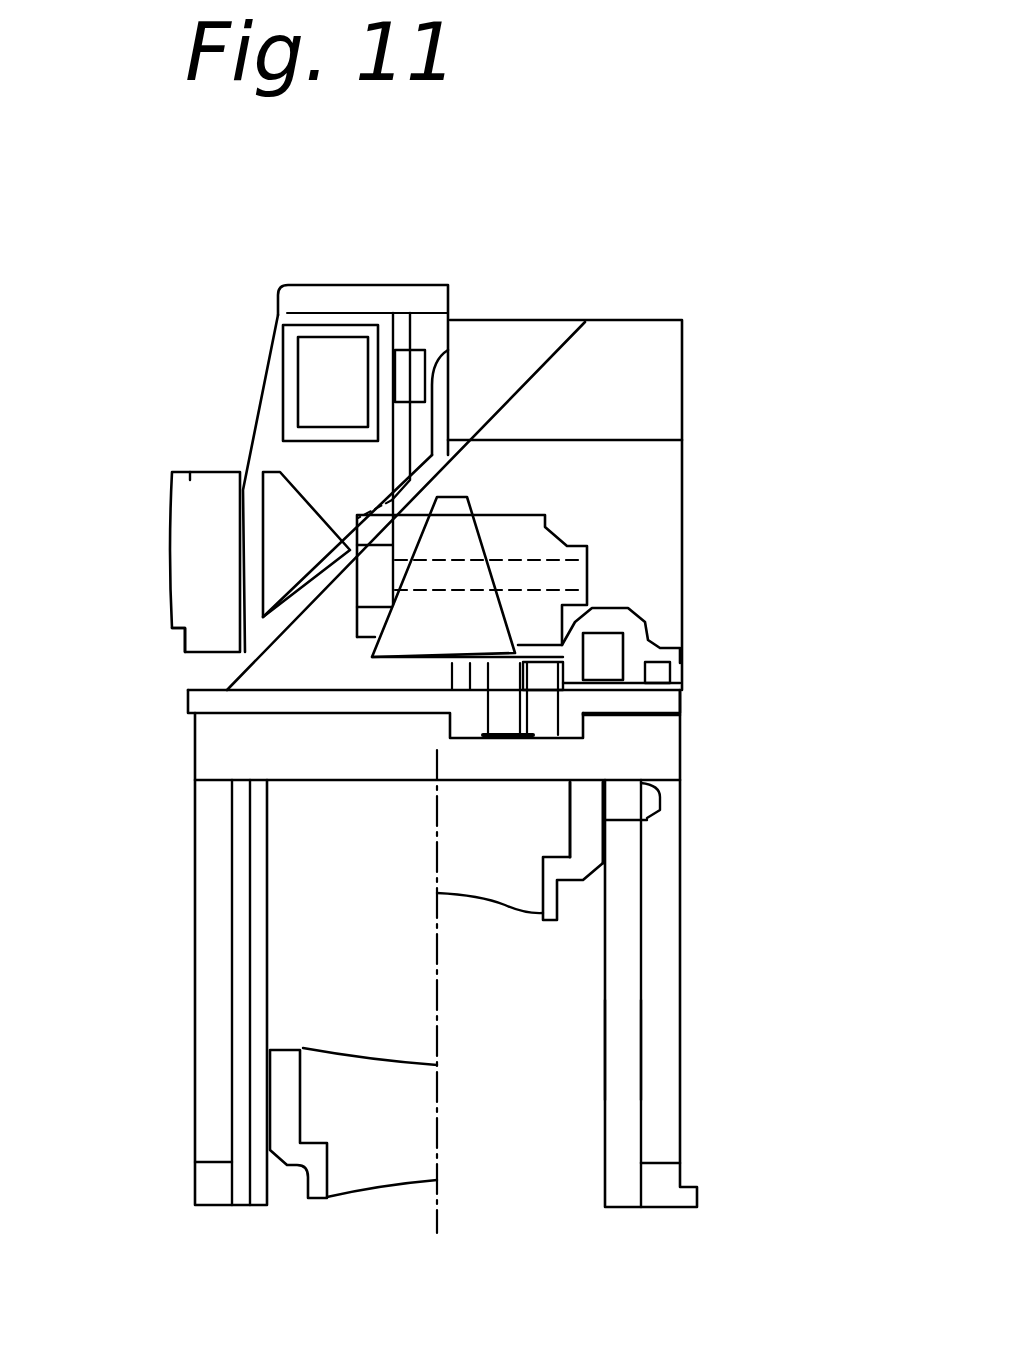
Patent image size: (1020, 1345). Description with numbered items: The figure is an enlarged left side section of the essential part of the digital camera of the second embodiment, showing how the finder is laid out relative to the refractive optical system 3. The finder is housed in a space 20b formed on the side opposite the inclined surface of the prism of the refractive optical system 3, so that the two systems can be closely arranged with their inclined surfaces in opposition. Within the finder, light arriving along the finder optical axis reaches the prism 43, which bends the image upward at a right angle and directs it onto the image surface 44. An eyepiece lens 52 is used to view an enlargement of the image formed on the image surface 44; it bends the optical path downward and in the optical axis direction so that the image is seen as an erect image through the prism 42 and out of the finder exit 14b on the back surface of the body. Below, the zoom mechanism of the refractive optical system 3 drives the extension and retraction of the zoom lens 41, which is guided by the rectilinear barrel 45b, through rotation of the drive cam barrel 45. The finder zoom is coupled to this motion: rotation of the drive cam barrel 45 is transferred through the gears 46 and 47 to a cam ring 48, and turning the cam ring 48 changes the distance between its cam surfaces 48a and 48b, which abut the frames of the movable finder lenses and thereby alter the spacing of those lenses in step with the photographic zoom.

The refractive optical system 3 is at (490, 1080).
The finder exit 14b is at (188, 596).
The space 20b is at (566, 332).
The zoom lens 41 is at (543, 843).
The prism 42 is at (283, 518).
The prism 43 is at (382, 324).
The image surface 44 is at (297, 290).
The drive cam barrel 45 is at (660, 913).
The rectilinear barrel 45b is at (625, 1014).
The gear 46 is at (583, 740).
The gear 47 is at (685, 650).
The cam ring 48 is at (527, 517).
The cam surface 48a is at (490, 515).
The cam surface 48b is at (448, 350).
The eyepiece lens 52 is at (190, 472).